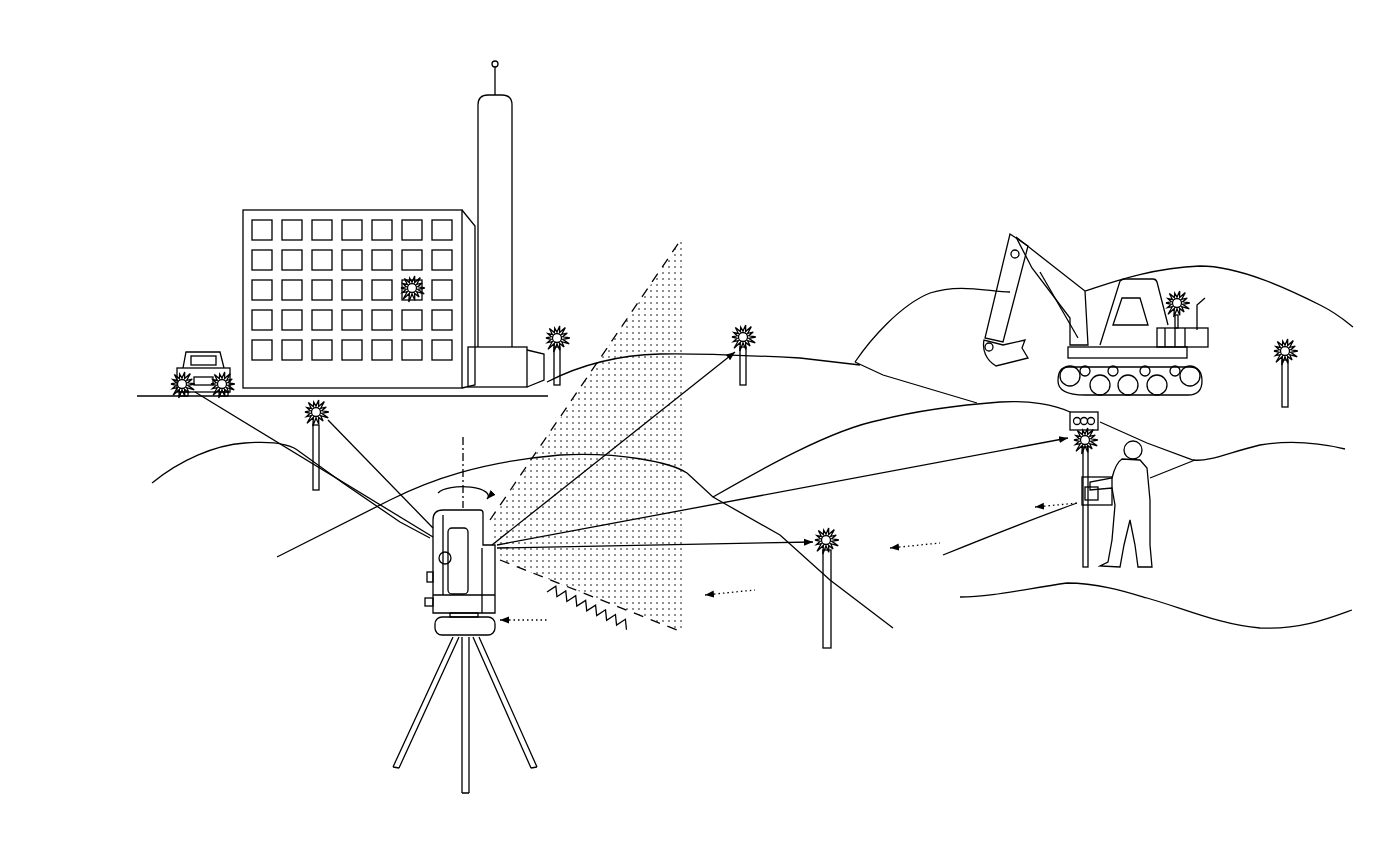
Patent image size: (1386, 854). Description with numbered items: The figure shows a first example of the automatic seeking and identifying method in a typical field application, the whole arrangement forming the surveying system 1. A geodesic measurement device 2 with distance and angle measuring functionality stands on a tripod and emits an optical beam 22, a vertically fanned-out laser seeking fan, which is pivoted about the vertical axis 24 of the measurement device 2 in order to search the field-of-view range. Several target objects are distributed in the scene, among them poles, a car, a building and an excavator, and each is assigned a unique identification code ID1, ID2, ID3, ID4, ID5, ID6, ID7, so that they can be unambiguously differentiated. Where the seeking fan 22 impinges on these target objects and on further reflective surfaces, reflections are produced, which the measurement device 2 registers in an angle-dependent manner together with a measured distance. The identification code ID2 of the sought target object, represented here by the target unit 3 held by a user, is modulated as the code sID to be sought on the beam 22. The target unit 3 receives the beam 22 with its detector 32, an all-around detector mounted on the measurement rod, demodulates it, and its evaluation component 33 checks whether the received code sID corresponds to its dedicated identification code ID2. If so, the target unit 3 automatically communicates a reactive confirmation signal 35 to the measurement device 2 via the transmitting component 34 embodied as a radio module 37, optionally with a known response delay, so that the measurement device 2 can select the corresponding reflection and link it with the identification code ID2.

The surveying system 1 is at (1250, 745).
The geodesic measurement device 2 is at (403, 597).
The target unit 3 is at (1021, 489).
The optical beam 22 is at (657, 300).
The vertical axis 24 is at (463, 430).
The detector 32 is at (1068, 424).
The evaluation component 33 is at (1118, 493).
The transmitting component 34 is at (1132, 539).
The radio module 37 is at (1089, 505).
The reactive confirmation signal 35 is at (744, 597).
The code to be sought sID is at (615, 632).
The identification code ID1 is at (829, 573).
The identification code ID2 is at (1098, 522).
The identification code ID3 is at (776, 334).
The identification code ID4 is at (339, 445).
The identification code ID5 is at (582, 334).
The identification code ID6 is at (1287, 365).
The identification code ID7 is at (1109, 311).